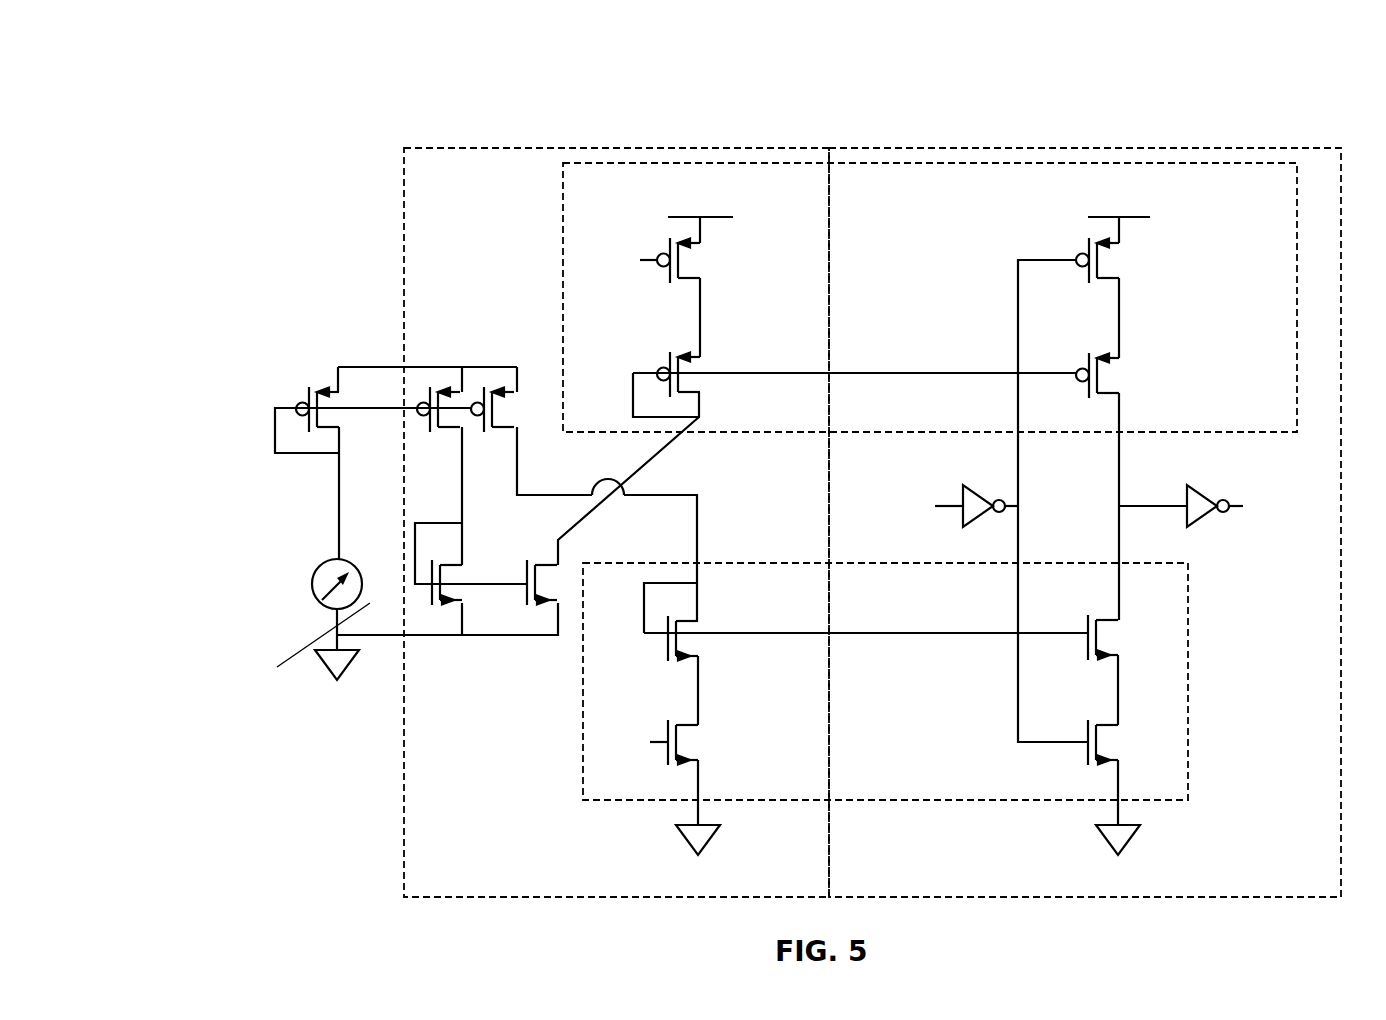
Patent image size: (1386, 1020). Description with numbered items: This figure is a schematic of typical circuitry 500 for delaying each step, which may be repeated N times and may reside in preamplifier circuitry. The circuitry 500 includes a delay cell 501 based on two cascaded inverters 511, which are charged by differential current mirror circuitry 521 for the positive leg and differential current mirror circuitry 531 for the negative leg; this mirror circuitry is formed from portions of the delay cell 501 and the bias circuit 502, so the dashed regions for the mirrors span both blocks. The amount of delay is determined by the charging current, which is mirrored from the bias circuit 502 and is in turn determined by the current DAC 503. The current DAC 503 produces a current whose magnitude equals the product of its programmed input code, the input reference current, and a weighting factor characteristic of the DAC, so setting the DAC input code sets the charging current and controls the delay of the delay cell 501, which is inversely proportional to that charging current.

The circuitry for delaying each step 500 is at (224, 76).
The delay cell 501 is at (897, 146).
The bias circuit 502 is at (478, 146).
The current DAC 503 is at (312, 583).
The inverters 511 is at (980, 492).
The differential current mirror circuitry for the positive leg 521 is at (563, 248).
The differential current mirror circuitry for the negative leg 531 is at (655, 563).